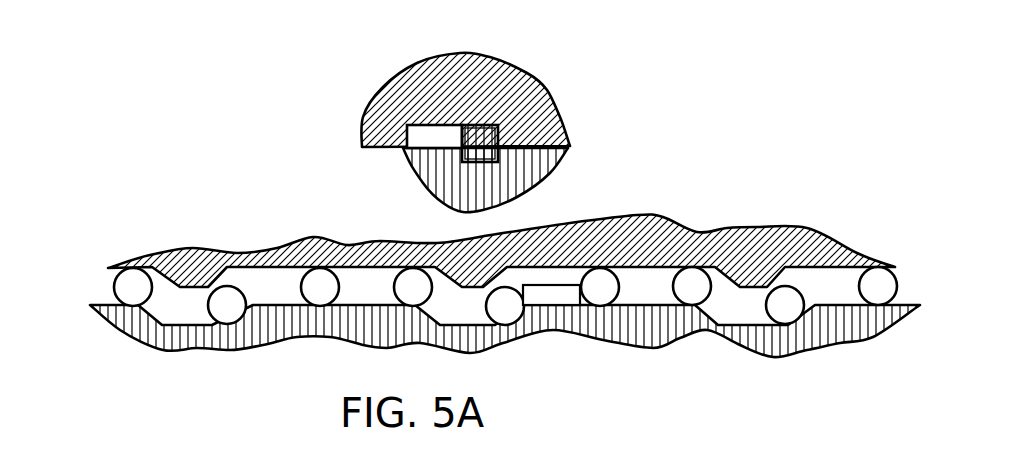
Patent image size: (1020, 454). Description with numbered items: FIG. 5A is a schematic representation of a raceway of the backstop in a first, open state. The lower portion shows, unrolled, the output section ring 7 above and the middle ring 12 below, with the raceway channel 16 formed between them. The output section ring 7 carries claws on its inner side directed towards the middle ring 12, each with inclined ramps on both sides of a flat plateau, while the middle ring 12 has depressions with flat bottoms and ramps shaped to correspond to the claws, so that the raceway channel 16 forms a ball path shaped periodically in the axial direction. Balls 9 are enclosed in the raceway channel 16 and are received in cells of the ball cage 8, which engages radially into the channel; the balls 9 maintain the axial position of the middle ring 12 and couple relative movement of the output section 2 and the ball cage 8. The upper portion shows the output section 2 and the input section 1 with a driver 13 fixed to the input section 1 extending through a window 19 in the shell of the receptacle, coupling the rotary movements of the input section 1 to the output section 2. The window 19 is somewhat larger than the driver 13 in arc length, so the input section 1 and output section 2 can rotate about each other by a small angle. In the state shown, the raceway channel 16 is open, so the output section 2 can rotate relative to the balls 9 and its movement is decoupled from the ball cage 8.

The input section 1 is at (532, 169).
The output section 2 is at (536, 89).
The output section ring 7 is at (660, 220).
The ball cage 8 is at (833, 286).
The balls 9 is at (779, 314).
The middle ring 12 is at (125, 322).
The driver 13 is at (471, 153).
The raceway channel 16 is at (102, 287).
The window 19 is at (423, 140).